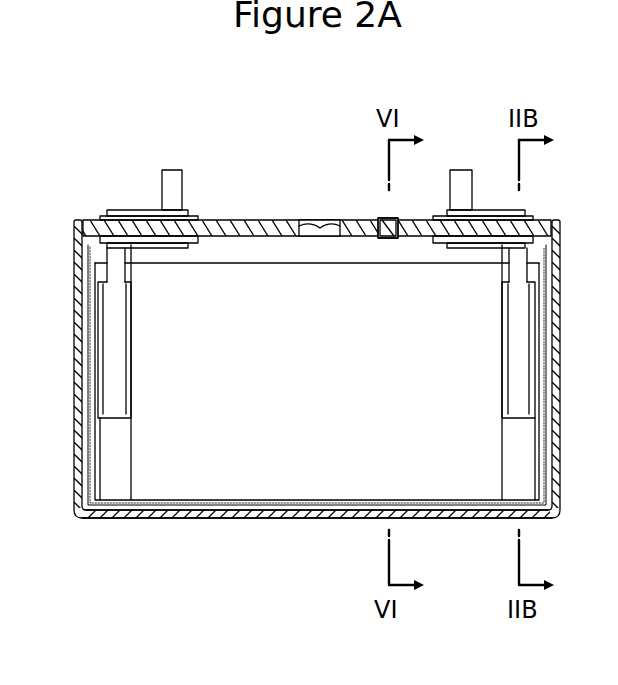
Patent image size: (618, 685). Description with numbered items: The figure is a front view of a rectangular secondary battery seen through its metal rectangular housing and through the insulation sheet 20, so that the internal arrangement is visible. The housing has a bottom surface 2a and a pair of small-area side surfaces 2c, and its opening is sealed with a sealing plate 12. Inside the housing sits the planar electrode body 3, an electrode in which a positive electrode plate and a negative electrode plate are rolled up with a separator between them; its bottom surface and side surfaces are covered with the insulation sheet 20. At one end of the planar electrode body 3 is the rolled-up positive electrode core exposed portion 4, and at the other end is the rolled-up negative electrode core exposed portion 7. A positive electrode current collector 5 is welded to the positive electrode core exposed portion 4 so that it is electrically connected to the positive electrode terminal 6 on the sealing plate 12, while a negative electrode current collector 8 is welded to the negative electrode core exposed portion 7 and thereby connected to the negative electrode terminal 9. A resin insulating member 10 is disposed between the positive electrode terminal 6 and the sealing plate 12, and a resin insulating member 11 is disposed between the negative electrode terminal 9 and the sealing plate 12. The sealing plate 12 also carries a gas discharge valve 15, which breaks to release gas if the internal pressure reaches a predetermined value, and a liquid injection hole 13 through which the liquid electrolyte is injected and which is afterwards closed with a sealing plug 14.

The bottom surface 2a is at (456, 519).
The small-area side surface 2c is at (74, 457).
The planar electrode body 3 is at (280, 445).
The positive electrode core exposed portion 4 is at (512, 470).
The positive electrode current collector 5 is at (518, 306).
The positive electrode terminal 6 is at (491, 168).
The negative electrode core exposed portion 7 is at (110, 477).
The negative electrode current collector 8 is at (113, 335).
The negative electrode terminal 9 is at (132, 167).
The insulating member 10 is at (440, 218).
The insulating member 11 is at (103, 218).
The sealing plate 12 is at (228, 228).
The liquid injection hole 13 is at (377, 220).
The sealing plug 14 is at (388, 218).
The gas discharge valve 15 is at (312, 222).
The insulation sheet 20 is at (178, 508).